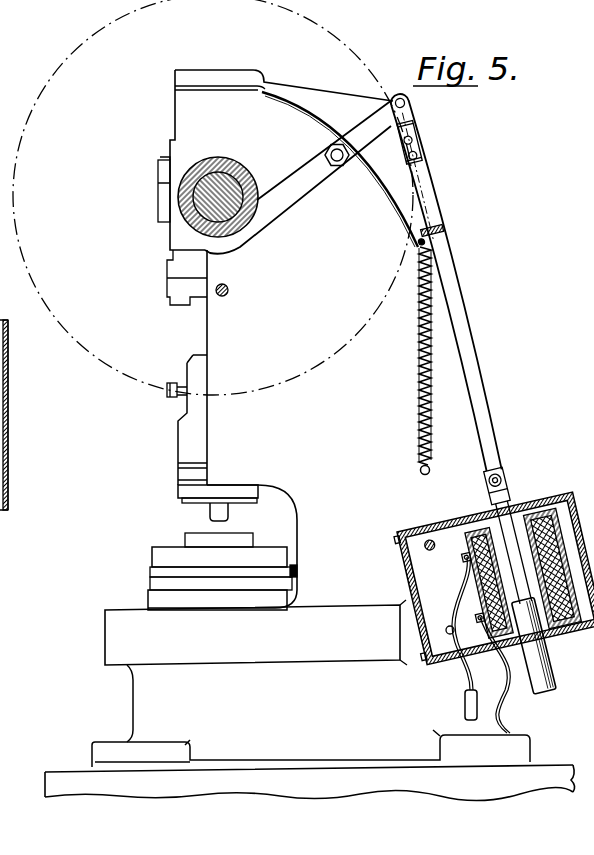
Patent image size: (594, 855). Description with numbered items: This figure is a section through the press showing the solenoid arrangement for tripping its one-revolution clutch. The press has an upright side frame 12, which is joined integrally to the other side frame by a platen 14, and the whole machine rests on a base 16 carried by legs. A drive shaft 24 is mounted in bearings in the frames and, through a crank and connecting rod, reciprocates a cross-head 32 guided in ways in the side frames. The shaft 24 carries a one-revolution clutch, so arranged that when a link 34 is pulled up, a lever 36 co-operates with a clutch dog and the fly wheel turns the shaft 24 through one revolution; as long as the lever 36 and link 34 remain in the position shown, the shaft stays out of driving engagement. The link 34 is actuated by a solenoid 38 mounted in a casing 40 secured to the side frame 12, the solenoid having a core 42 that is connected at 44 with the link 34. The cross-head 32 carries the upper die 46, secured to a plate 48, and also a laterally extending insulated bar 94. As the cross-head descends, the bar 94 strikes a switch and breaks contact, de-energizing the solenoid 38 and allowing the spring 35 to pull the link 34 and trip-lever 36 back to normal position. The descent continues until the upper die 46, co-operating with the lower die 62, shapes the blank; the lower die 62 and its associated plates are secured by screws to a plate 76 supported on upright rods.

The side frame 12 is at (283, 339).
The platen 14 is at (311, 683).
The base 16 is at (48, 780).
The drive shaft 24 is at (220, 177).
The cross-head 32 is at (177, 437).
The link 34 is at (433, 212).
The spring 35 is at (418, 380).
The lever 36 is at (305, 187).
The solenoid 38 is at (475, 583).
The casing 40 is at (10, 470).
The core 42 is at (548, 670).
The connection 44 is at (506, 471).
The upper die 46 is at (190, 505).
The plate 48 is at (178, 488).
The lower die 62 is at (152, 552).
The plate 76 is at (150, 598).
The insulated bar 94 is at (168, 372).